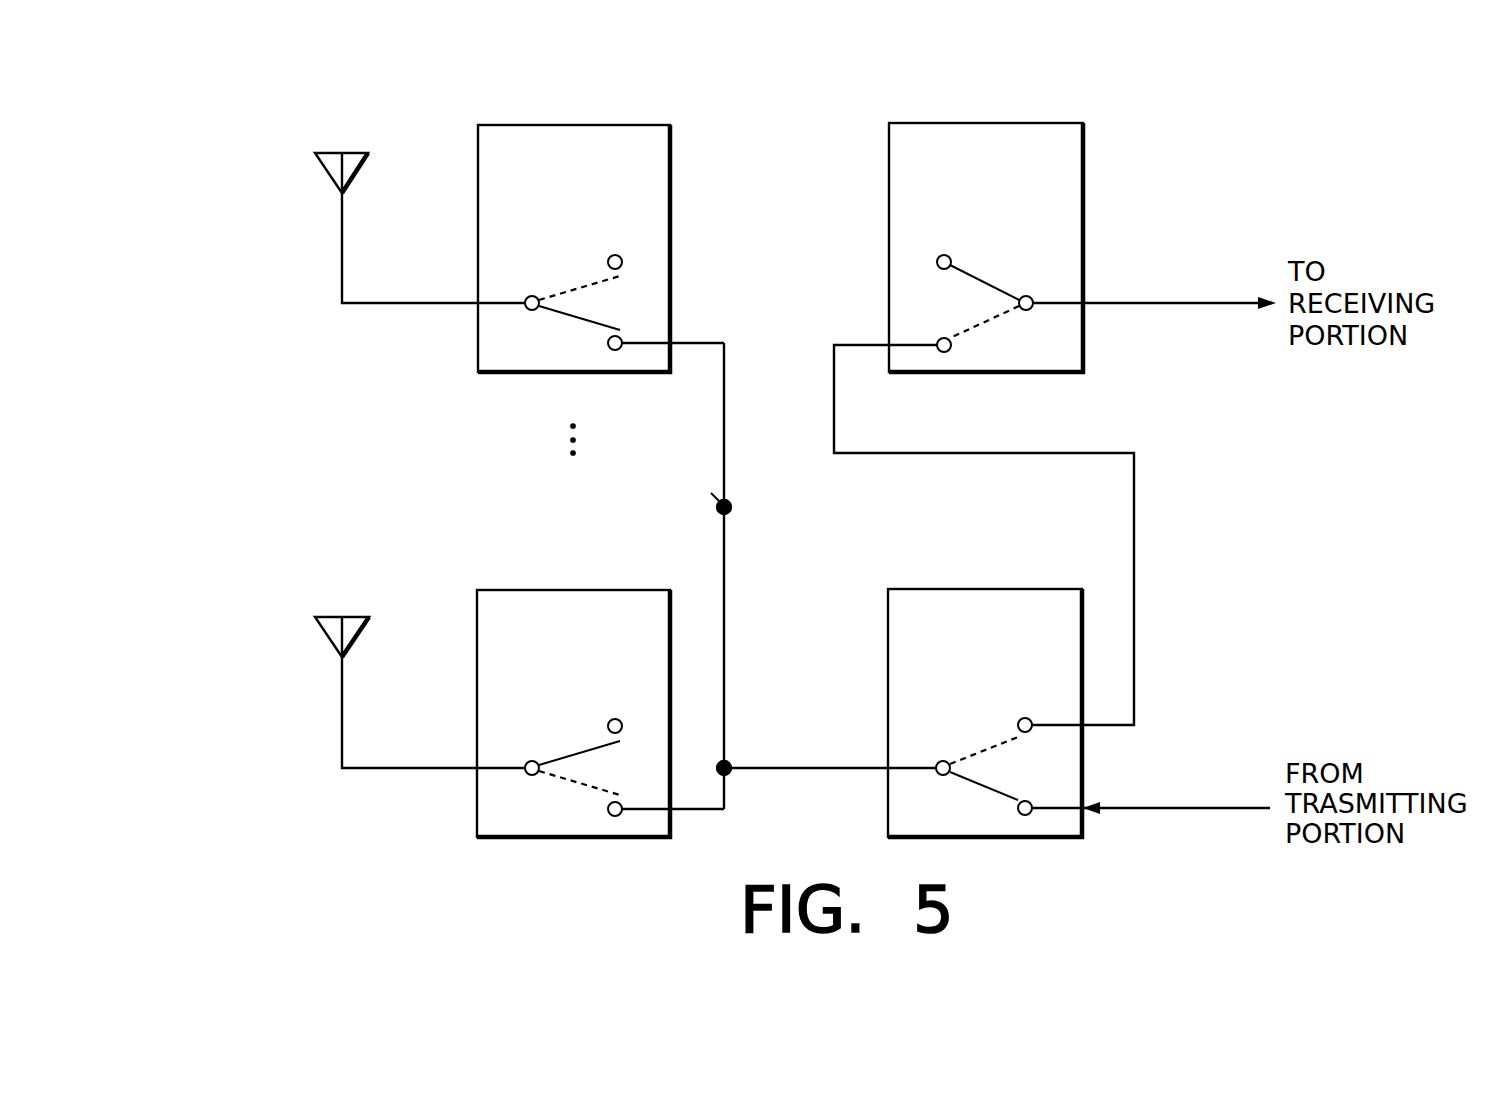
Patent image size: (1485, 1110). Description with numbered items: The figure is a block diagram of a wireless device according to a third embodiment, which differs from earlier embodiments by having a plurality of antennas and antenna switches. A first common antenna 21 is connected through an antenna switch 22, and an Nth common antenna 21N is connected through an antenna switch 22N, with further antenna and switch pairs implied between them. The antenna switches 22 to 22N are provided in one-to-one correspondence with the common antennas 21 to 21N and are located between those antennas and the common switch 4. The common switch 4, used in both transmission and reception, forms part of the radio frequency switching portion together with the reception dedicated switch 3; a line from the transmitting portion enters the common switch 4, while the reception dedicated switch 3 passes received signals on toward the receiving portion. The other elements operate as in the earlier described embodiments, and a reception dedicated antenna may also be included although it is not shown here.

The common antenna 21 is at (330, 153).
The antenna switch 22 is at (602, 125).
The common antenna 21N is at (331, 617).
The antenna switch 22N is at (601, 590).
The reception dedicated switch 3 is at (985, 123).
The common switch 4 is at (985, 589).